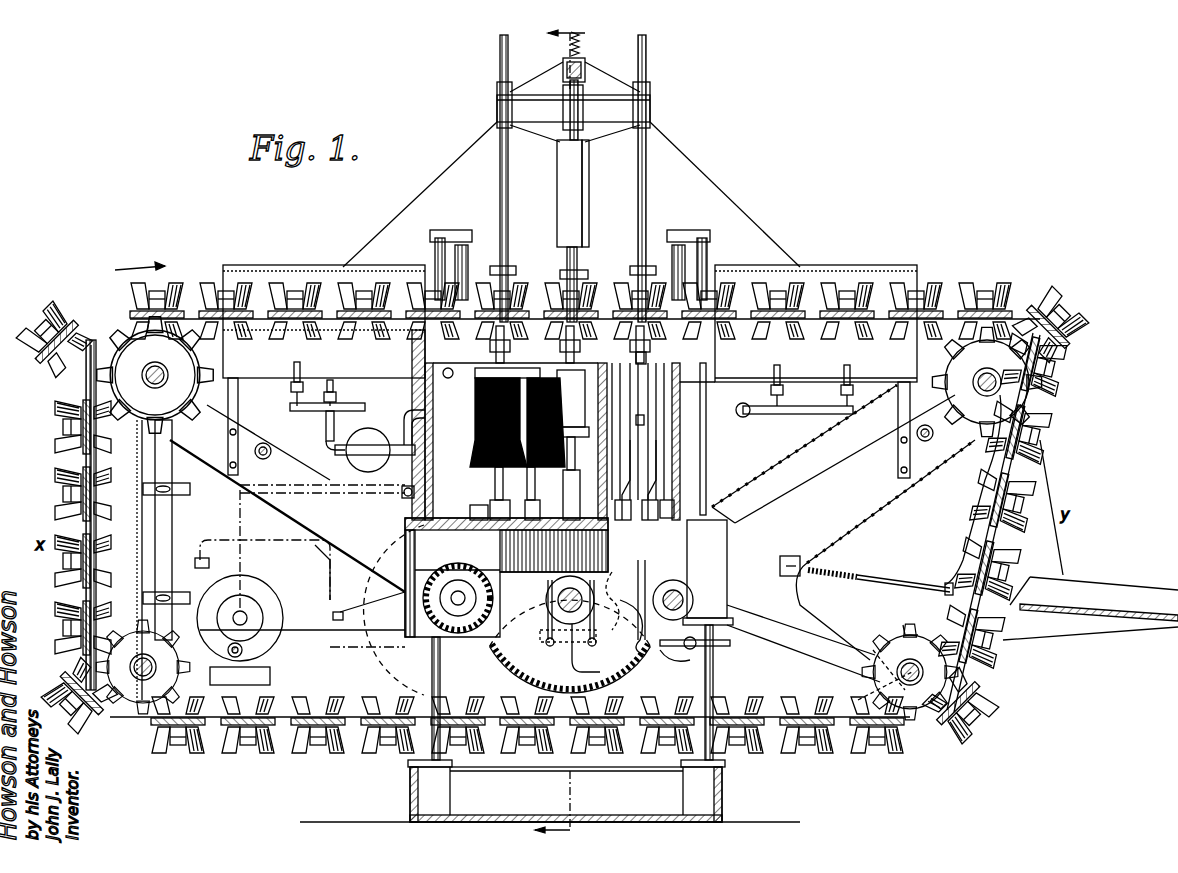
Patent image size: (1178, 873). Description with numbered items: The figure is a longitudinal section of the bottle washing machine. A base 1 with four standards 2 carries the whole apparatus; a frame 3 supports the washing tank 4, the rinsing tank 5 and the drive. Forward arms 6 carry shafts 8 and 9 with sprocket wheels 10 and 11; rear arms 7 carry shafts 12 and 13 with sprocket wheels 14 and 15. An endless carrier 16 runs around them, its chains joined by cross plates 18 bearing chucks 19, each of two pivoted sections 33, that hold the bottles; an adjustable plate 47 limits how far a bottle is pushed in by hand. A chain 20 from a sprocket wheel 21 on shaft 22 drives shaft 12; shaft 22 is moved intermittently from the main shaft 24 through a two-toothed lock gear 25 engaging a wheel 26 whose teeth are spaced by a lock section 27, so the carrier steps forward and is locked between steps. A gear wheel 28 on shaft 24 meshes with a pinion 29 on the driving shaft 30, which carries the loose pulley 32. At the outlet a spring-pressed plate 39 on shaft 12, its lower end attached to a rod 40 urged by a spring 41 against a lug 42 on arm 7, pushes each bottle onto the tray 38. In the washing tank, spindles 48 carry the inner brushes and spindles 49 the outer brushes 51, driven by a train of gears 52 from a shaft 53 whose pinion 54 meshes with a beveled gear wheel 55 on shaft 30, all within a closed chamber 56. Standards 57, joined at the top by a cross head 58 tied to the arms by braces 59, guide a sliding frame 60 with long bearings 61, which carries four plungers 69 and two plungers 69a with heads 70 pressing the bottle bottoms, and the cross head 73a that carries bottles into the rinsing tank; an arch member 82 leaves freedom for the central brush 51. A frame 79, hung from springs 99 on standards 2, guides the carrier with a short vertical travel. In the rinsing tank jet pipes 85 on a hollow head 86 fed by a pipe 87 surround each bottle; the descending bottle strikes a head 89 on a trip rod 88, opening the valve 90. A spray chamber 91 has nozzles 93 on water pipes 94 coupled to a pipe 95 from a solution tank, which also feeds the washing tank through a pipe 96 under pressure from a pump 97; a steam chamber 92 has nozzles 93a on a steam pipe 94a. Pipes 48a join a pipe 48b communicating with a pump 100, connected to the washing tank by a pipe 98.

The base 1 is at (722, 790).
The standards 2 is at (433, 258).
The frame 3 is at (727, 580).
The washing tank 4 is at (516, 432).
The rinsing tank 5 is at (570, 392).
The arms 6 is at (271, 552).
The arms 7 is at (591, 530).
The shaft 8 is at (163, 372).
The shaft 9 is at (152, 664).
The sprocket wheel 10 is at (155, 375).
The sprocket wheel 11 is at (143, 667).
The shaft 12 is at (973, 382).
The shaft 13 is at (916, 660).
The sprocket wheel 14 is at (986, 381).
The sprocket wheel 15 is at (907, 620).
The endless carrier 16 is at (1005, 303).
The cross plates 18 is at (1010, 330).
The chucks 19 is at (1068, 345).
The chain 20 is at (843, 474).
The sprocket wheel 21 is at (675, 665).
The shaft 22 is at (693, 600).
The main shaft 24 is at (570, 603).
The lock gear 25 is at (589, 648).
The wheel 26 is at (621, 627).
The lock section 27 is at (621, 601).
The gear wheel 28 is at (570, 648).
The pinion 29 is at (458, 598).
The driving shaft 30 is at (458, 605).
The loose pulley 32 is at (393, 610).
The chuck sections 33 is at (962, 296).
The tray 38 is at (1090, 540).
The spring-pressed plate 39 is at (983, 490).
The rod 40 is at (905, 581).
The spring 41 is at (832, 581).
The lug 42 is at (790, 557).
The adjustable plate 47 is at (97, 545).
The spindles 48 is at (538, 495).
The pipes 48a is at (554, 622).
The pipe 48b is at (367, 606).
The spindles 49 is at (535, 510).
The brushes 51 is at (517, 413).
The train of gears 52 is at (555, 613).
The shaft 53 is at (471, 510).
The pinion 54 is at (440, 570).
The beveled gear wheel 55 is at (369, 632).
The closed chamber 56 is at (405, 542).
The standards 57 is at (580, 260).
The cross head 58 is at (582, 66).
The braces 59 is at (430, 186).
The sliding frame 60 is at (573, 102).
The long bearings 61 is at (557, 185).
The plungers 69 is at (568, 160).
The plungers 69a is at (654, 178).
The heads 70 is at (512, 272).
The cross head 73a is at (646, 360).
The frame 79 is at (548, 344).
The arch member 82 is at (458, 373).
The jet pipes 85 is at (620, 365).
The hollow head 86 is at (670, 504).
The pipe 87 is at (695, 640).
The trip rod 88 is at (650, 480).
The head 89 is at (644, 418).
The valve 90 is at (680, 635).
The spray chamber 91 is at (324, 349).
The steam chamber 92 is at (816, 360).
The nozzles 93 is at (300, 368).
The nozzles 93a is at (822, 378).
The water pipes 94 is at (330, 386).
The steam pipe 94a is at (794, 401).
The pipe 95 is at (326, 427).
The pipe 96 is at (412, 427).
The pump 97 is at (375, 450).
The pipe 98 is at (302, 490).
The springs 99 is at (468, 258).
The pump 100 is at (278, 620).